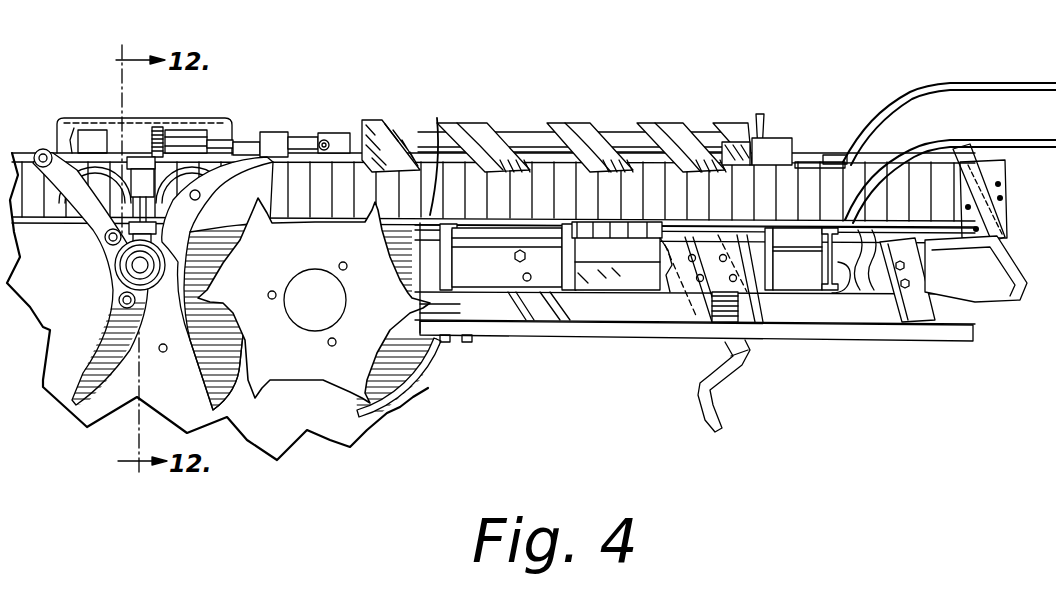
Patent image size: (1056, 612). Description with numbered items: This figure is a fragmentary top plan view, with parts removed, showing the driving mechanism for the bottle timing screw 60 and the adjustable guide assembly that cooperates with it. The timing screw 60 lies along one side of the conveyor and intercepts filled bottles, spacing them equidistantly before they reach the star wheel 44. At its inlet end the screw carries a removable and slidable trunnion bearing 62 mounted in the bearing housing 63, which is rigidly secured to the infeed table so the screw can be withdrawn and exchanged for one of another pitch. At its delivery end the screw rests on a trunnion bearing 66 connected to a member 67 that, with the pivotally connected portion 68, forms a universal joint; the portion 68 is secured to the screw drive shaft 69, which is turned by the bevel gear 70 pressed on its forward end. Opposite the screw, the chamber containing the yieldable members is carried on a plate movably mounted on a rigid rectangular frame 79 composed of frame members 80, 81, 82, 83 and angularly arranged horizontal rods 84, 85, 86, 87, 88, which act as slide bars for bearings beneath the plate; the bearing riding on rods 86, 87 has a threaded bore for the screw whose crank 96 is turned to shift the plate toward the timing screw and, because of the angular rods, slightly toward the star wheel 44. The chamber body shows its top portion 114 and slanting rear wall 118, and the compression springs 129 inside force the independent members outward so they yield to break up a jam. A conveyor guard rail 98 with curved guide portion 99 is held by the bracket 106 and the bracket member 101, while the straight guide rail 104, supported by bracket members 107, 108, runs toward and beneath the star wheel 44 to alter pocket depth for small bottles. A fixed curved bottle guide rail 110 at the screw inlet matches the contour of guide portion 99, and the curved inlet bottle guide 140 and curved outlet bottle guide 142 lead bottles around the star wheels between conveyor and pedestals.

The star wheel 44 is at (290, 365).
The timing screw 60 is at (471, 122).
The trunnion bearing 62 is at (743, 150).
The bearing housing 63 is at (790, 146).
The trunnion bearing 66 is at (381, 132).
The universal joint member 67 is at (344, 133).
The universal joint portion 68 is at (297, 132).
The screw drive shaft 69 is at (242, 138).
The bevel gear 70 is at (158, 128).
The rectangular frame 79 is at (854, 334).
The frame member 80 is at (618, 332).
The frame member 81 is at (432, 303).
The frame member 82 is at (433, 238).
The frame member 83 is at (973, 316).
The horizontal rod 84 is at (518, 304).
The horizontal rod 85 is at (556, 306).
The horizontal rod 86 is at (697, 310).
The horizontal rod 87 is at (770, 313).
The horizontal rod 88 is at (897, 308).
The crank 96 is at (722, 414).
The conveyor guard rail 98 is at (793, 222).
The curved guide portion 99 is at (999, 138).
The bracket member 101 is at (985, 165).
The straight guide rail 104 is at (431, 159).
The bracket 106 is at (848, 274).
The bracket member 107 is at (452, 268).
The bracket member 108 is at (568, 264).
The curved bottle guide rail 110 is at (990, 82).
The top portion 114 is at (604, 260).
The slanting rear wall 118 is at (648, 286).
The compression spring 129 is at (660, 242).
The curved inlet bottle guide 140 is at (174, 326).
The curved outlet bottle guide 142 is at (127, 322).